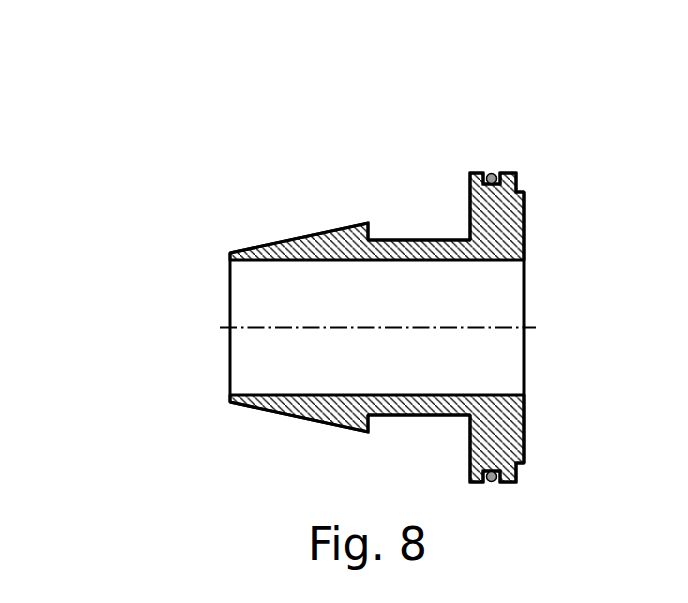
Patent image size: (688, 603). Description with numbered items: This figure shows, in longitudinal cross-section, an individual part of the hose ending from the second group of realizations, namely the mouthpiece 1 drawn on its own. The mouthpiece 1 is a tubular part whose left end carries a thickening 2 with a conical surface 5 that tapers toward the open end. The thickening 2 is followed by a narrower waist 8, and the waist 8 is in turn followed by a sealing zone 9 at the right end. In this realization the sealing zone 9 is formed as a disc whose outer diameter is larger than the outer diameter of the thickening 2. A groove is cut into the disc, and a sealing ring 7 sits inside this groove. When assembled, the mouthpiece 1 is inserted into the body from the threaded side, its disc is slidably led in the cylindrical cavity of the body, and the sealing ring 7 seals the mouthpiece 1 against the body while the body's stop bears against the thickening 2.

The mouthpiece 1 is at (203, 172).
The thickening 2 is at (366, 222).
The conical surface 5 is at (270, 244).
The sealing ring 7 is at (491, 172).
The waist 8 is at (415, 240).
The sealing zone 9 is at (508, 174).